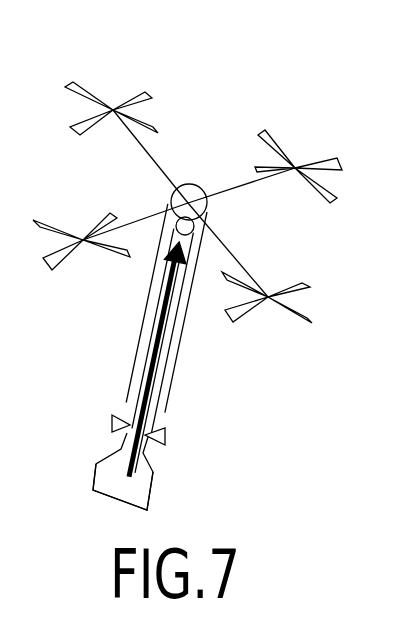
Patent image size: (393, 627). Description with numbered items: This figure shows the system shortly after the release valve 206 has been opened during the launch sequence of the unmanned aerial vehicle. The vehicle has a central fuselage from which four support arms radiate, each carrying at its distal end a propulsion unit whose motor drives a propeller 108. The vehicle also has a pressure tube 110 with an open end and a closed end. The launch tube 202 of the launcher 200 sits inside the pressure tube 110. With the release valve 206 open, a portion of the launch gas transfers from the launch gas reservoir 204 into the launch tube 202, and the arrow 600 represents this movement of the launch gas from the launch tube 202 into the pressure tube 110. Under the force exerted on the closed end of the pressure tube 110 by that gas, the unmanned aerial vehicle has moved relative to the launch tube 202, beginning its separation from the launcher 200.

The propeller 108 is at (90, 92).
The pressure tube 110 is at (200, 262).
The launcher 200 is at (105, 455).
The launch tube 202 is at (157, 374).
The launch gas reservoir 204 is at (150, 477).
The release valve 206 is at (163, 430).
The arrow 600 is at (138, 391).